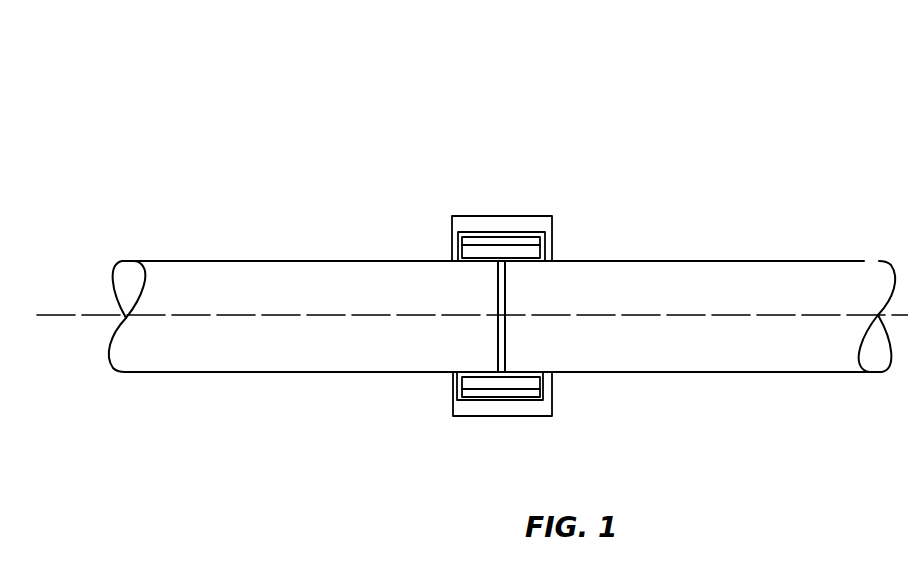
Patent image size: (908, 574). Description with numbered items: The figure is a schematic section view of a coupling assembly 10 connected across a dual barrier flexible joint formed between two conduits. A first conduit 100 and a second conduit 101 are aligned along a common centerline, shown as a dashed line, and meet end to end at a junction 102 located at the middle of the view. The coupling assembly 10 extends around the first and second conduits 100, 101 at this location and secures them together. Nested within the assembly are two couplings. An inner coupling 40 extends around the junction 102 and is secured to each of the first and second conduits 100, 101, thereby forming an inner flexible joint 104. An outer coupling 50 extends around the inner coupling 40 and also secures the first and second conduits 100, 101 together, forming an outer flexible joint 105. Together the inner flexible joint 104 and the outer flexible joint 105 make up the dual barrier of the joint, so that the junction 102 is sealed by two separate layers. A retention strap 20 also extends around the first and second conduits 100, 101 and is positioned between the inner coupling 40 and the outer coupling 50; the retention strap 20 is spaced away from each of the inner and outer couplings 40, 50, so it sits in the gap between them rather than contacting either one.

The coupling assembly 10 is at (664, 140).
The retention strap 20 is at (458, 238).
The inner coupling 40 is at (465, 250).
The outer coupling 50 is at (455, 221).
The first conduit 100 is at (288, 337).
The second conduit 101 is at (697, 362).
The junction 102 is at (509, 298).
The inner flexible joint 104 is at (555, 242).
The outer flexible joint 105 is at (518, 230).